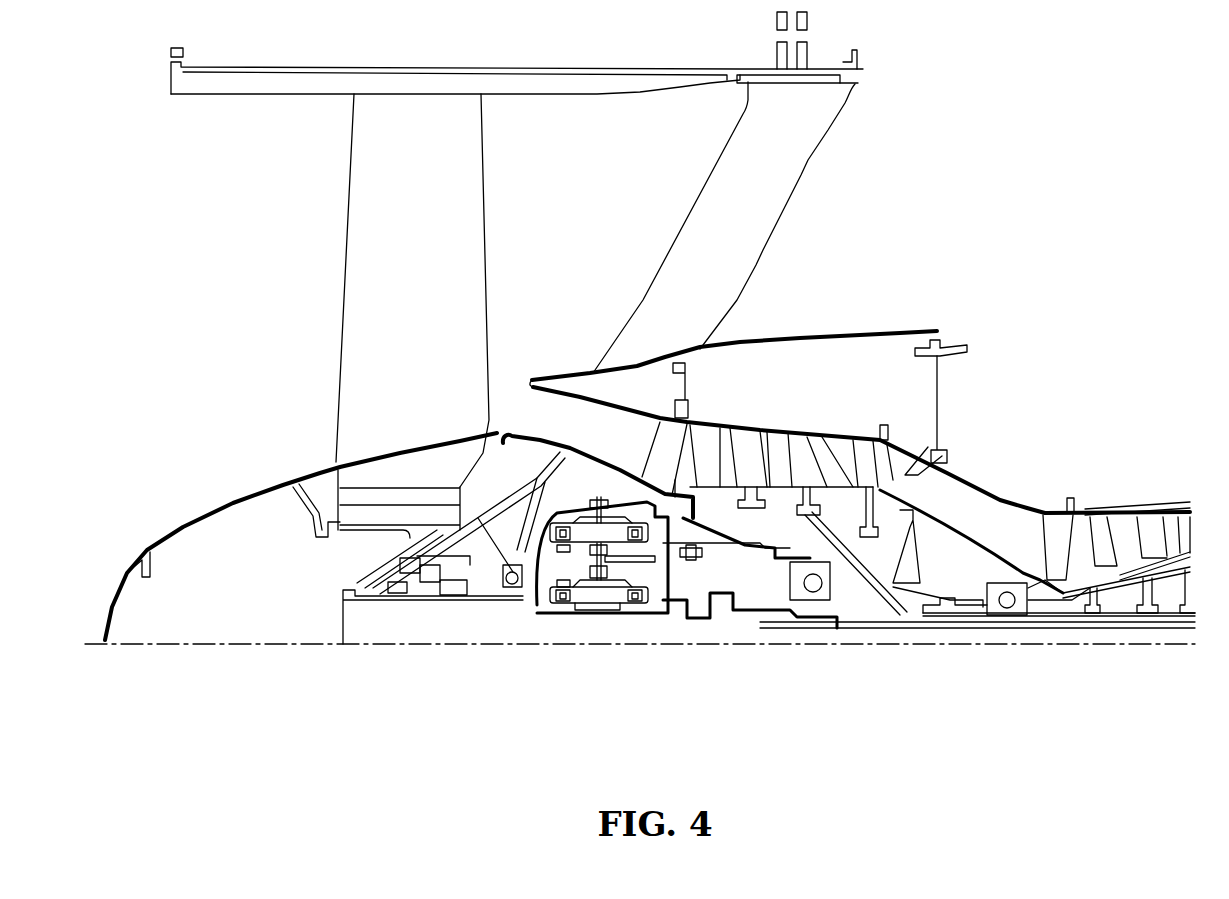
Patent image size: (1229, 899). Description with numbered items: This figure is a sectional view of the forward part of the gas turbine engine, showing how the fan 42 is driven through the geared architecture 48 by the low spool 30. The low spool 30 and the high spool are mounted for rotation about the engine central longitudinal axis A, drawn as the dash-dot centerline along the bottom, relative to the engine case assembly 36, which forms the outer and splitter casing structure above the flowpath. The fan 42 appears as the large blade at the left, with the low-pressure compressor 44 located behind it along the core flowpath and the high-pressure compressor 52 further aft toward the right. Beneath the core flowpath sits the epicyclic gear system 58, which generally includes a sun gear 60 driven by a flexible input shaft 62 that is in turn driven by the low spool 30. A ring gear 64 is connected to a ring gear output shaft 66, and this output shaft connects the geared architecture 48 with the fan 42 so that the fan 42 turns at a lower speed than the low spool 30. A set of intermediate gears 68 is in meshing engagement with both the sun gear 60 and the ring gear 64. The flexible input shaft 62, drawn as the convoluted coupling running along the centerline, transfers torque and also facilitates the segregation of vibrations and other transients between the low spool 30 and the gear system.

The low spool 30 is at (897, 624).
The engine case assembly 36 is at (938, 329).
The fan 42 is at (398, 259).
The low-pressure compressor 44 is at (807, 440).
The geared architecture 48 is at (591, 587).
The high-pressure compressor 52 is at (1146, 532).
The epicyclic gear system 58 is at (507, 622).
The sun gear 60 is at (577, 612).
The flexible input shaft 62 is at (708, 620).
The ring gear 64 is at (615, 505).
The ring gear output shaft 66 is at (543, 520).
The intermediate gears 68 is at (580, 537).
The engine central longitudinal axis A is at (1153, 650).